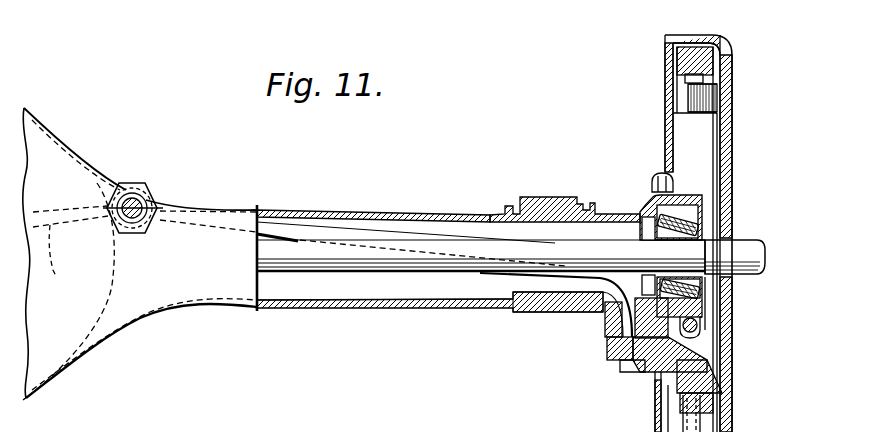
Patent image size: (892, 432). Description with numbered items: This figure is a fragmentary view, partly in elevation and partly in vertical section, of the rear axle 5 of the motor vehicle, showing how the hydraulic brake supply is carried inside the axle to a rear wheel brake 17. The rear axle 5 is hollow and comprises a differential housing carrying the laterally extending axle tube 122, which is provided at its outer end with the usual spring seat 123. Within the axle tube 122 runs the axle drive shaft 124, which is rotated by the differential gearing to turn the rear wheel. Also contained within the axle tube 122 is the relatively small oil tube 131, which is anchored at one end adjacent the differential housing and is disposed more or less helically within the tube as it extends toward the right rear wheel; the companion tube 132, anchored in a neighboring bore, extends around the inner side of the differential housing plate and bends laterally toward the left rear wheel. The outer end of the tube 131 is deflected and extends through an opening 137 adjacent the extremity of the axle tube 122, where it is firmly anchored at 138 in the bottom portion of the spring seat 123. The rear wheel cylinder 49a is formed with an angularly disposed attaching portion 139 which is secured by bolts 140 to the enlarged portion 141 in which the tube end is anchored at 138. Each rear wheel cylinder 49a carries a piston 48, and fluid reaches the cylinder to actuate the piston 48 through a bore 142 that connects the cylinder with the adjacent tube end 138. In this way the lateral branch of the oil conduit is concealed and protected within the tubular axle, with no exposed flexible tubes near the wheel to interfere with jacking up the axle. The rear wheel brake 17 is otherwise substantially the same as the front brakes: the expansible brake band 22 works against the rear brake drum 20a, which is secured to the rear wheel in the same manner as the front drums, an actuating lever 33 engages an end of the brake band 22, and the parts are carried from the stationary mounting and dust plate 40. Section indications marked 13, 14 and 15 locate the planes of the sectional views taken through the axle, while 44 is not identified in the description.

The rear axle 5 is at (390, 208).
The link 13 is at (73, 228).
The link 14 is at (133, 378).
The steering gear 15 is at (610, 174).
The rear wheel brake 17 is at (653, 233).
The rear brake drum 20a is at (745, 118).
The brake band 22 is at (698, 54).
The actuating lever 33 is at (700, 424).
The mounting and dust plate 40 is at (668, 62).
The roller bearing 44 is at (688, 94).
The piston 48 is at (717, 370).
The rear wheel cylinder 49a is at (717, 388).
The axle tube 122 is at (366, 293).
The spring seat 123 is at (513, 309).
The axle drive shaft 124 is at (347, 263).
The tube 131 is at (280, 233).
The tube 132 is at (66, 259).
The opening 137 is at (607, 314).
The anchored tube end 138 is at (615, 333).
The attaching portion 139 is at (622, 377).
The bolt 140 is at (647, 362).
The enlarged portion 141 is at (622, 343).
The bore 142 is at (650, 380).